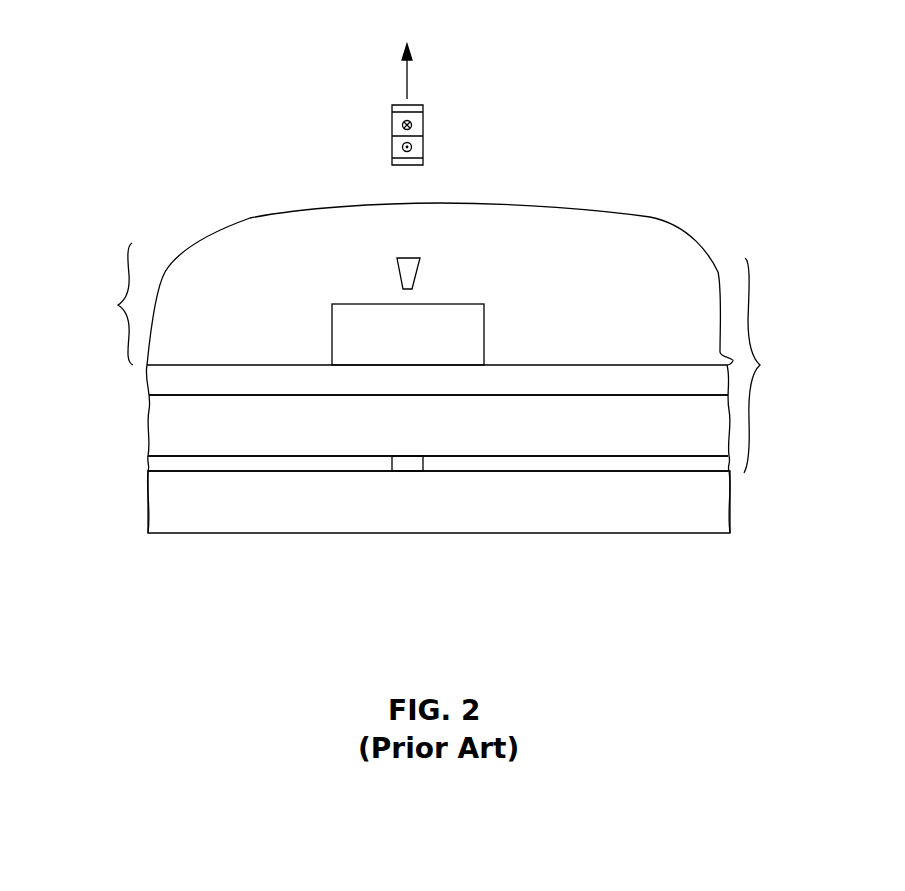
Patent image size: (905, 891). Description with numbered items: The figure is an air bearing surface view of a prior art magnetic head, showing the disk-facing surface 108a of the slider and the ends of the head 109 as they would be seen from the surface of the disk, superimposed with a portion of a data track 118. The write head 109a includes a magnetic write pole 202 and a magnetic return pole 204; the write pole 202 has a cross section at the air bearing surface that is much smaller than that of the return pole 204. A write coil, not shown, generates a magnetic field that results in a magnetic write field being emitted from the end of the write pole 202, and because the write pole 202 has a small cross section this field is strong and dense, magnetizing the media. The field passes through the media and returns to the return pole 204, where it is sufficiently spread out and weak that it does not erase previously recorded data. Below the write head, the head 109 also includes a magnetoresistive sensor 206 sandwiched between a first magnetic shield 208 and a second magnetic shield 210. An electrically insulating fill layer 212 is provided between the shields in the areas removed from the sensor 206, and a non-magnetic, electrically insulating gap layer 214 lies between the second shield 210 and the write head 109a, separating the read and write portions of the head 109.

The data track 118 is at (423, 127).
The head 109 is at (750, 272).
The write head 109a is at (128, 263).
The disk-facing surface 108a is at (440, 284).
The magnetic write pole 202 is at (407, 268).
The magnetic return pole 204 is at (433, 335).
The magnetoresistive sensor 206 is at (408, 463).
The first magnetic shield 208 is at (568, 510).
The second magnetic shield 210 is at (473, 426).
The electrically insulating fill layer 212 is at (575, 463).
The gap layer 214 is at (491, 380).